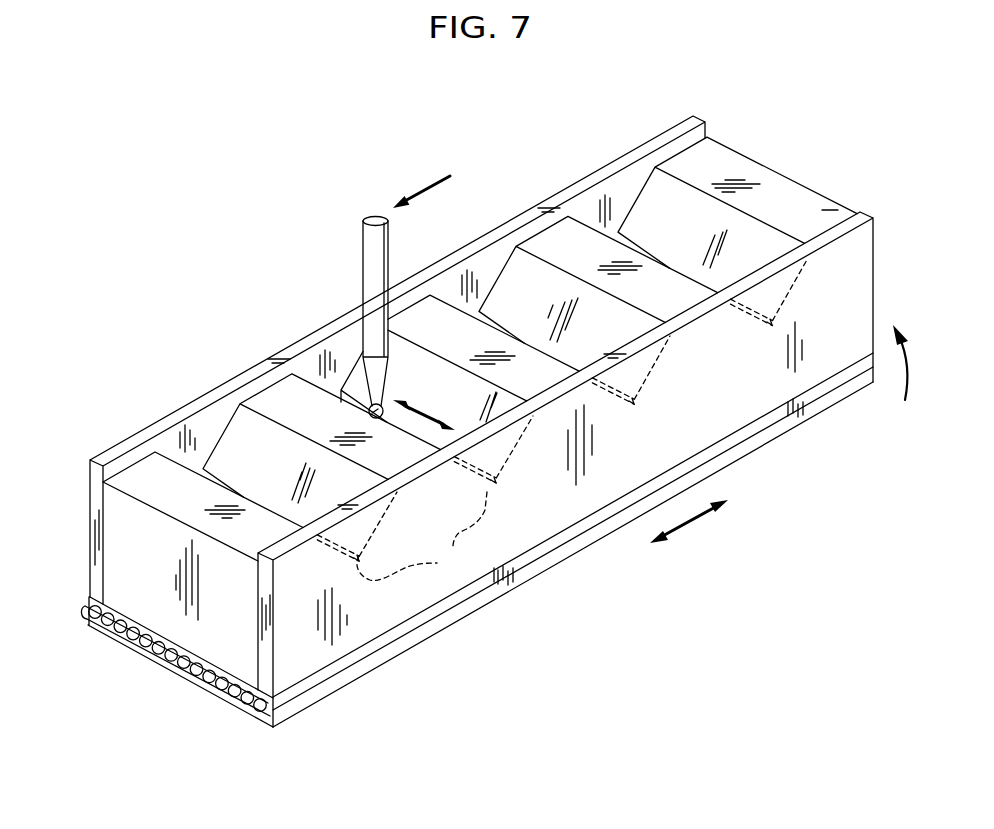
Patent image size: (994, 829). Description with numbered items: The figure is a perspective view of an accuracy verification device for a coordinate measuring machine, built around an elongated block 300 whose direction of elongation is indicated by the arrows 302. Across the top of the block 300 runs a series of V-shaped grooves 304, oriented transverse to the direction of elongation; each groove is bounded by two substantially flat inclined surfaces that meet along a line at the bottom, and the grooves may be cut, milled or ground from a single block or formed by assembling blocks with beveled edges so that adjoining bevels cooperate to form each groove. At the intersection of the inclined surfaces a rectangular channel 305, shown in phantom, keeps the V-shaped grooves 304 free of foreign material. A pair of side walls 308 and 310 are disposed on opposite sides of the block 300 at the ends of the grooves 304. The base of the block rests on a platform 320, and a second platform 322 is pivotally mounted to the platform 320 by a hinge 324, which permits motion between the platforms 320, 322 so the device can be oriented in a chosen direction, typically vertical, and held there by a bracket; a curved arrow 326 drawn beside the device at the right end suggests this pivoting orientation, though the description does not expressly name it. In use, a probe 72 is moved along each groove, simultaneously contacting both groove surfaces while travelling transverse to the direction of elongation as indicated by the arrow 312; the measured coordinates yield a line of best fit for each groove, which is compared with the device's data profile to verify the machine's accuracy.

The probe 72 is at (363, 270).
The block 300 is at (805, 182).
The arrows indicating direction of elongation 302 is at (692, 522).
The V-shaped grooves 304 is at (655, 213).
The rectangular channel 305 is at (562, 419).
The side wall 308 is at (268, 667).
The side wall 310 is at (90, 497).
The arrow indicating probe direction 312 is at (425, 410).
The platform 320 is at (541, 550).
The second platform 322 is at (586, 540).
The hinge 324 is at (242, 698).
The vertical movement direction 326 is at (905, 400).